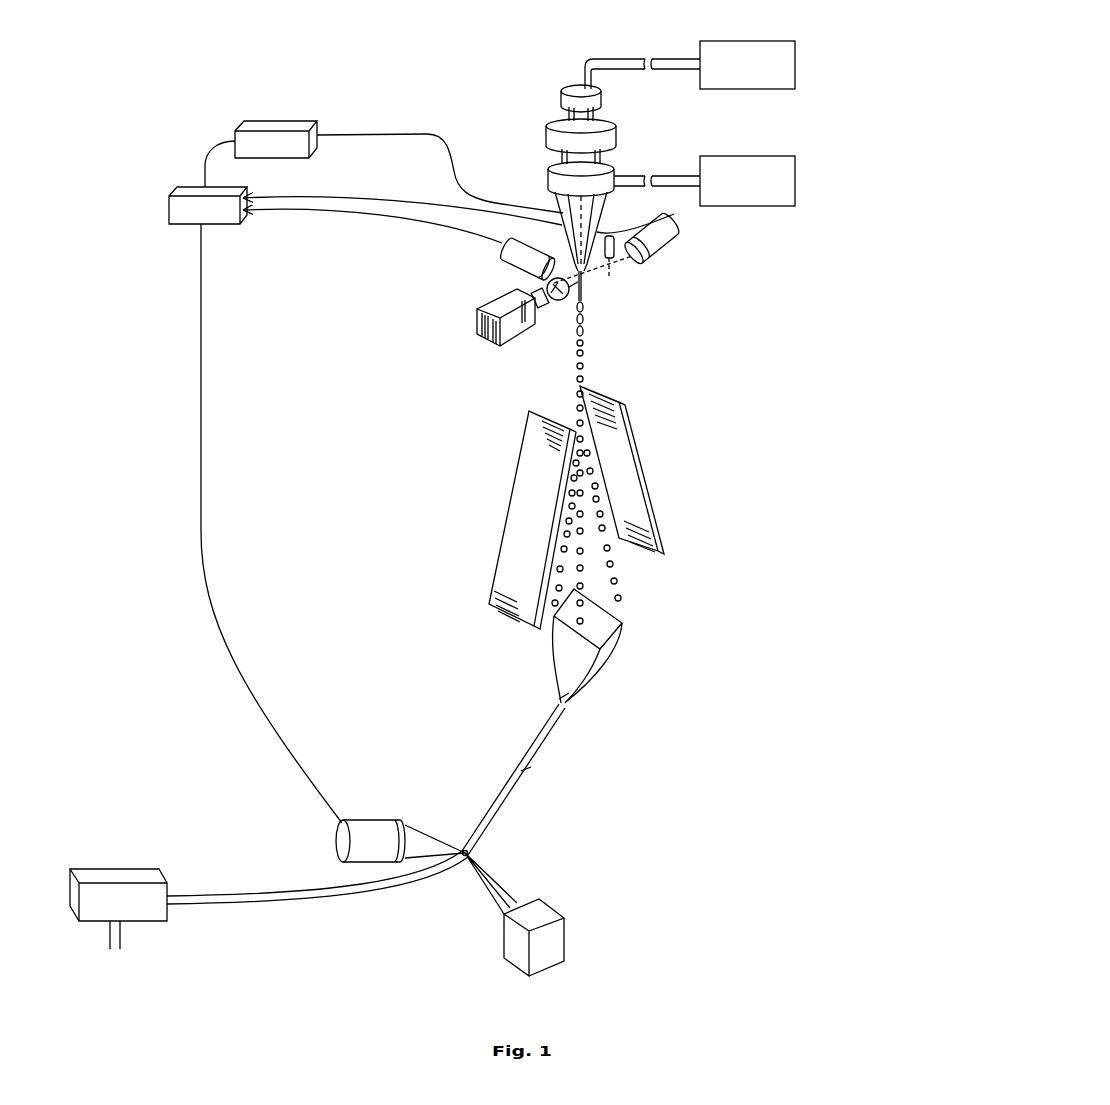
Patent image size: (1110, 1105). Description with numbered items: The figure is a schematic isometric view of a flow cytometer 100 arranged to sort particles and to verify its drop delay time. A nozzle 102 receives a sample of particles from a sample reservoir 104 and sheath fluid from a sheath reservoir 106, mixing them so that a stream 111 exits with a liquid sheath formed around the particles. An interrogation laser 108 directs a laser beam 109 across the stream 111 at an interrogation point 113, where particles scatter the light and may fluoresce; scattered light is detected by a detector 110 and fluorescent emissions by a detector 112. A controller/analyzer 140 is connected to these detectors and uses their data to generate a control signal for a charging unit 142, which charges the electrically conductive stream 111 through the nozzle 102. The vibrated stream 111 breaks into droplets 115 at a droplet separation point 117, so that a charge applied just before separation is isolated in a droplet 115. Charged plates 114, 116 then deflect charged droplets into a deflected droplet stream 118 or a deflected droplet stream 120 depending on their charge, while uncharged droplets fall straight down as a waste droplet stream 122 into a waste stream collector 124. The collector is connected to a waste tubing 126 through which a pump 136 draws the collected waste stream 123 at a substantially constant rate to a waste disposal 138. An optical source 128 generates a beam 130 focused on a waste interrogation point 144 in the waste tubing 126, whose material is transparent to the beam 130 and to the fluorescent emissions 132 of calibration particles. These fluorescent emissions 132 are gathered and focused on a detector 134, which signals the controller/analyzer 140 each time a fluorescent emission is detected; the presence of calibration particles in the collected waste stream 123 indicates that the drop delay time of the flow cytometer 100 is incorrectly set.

The flow cytometer 100 is at (244, 78).
The nozzle 102 is at (546, 128).
The sample reservoir 104 is at (742, 33).
The sheath reservoir 106 is at (750, 155).
The interrogation laser 108 is at (475, 310).
The laser beam 109 is at (557, 303).
The detector 110 is at (677, 245).
The stream 111 is at (584, 285).
The detector 112 is at (503, 264).
The interrogation point 113 is at (583, 277).
The charged plate 114 is at (518, 452).
The droplets 115 is at (588, 367).
The charged plate 116 is at (645, 468).
The droplet separation point 117 is at (584, 341).
The deflected droplet stream 118 is at (550, 573).
The deflected droplet stream 120 is at (623, 567).
The waste droplet stream 122 is at (594, 589).
The collected waste stream 123 is at (527, 770).
The waste stream collector 124 is at (598, 667).
The waste tubing 126 is at (553, 732).
The optical source 128 is at (563, 930).
The beam 130 is at (478, 877).
The fluorescent emissions 132 is at (430, 835).
The detector 134 is at (360, 818).
The pump 136 is at (115, 868).
The waste disposal 138 is at (120, 938).
The controller/analyzer 140 is at (165, 207).
The charging unit 142 is at (286, 120).
The waste interrogation point 144 is at (498, 858).